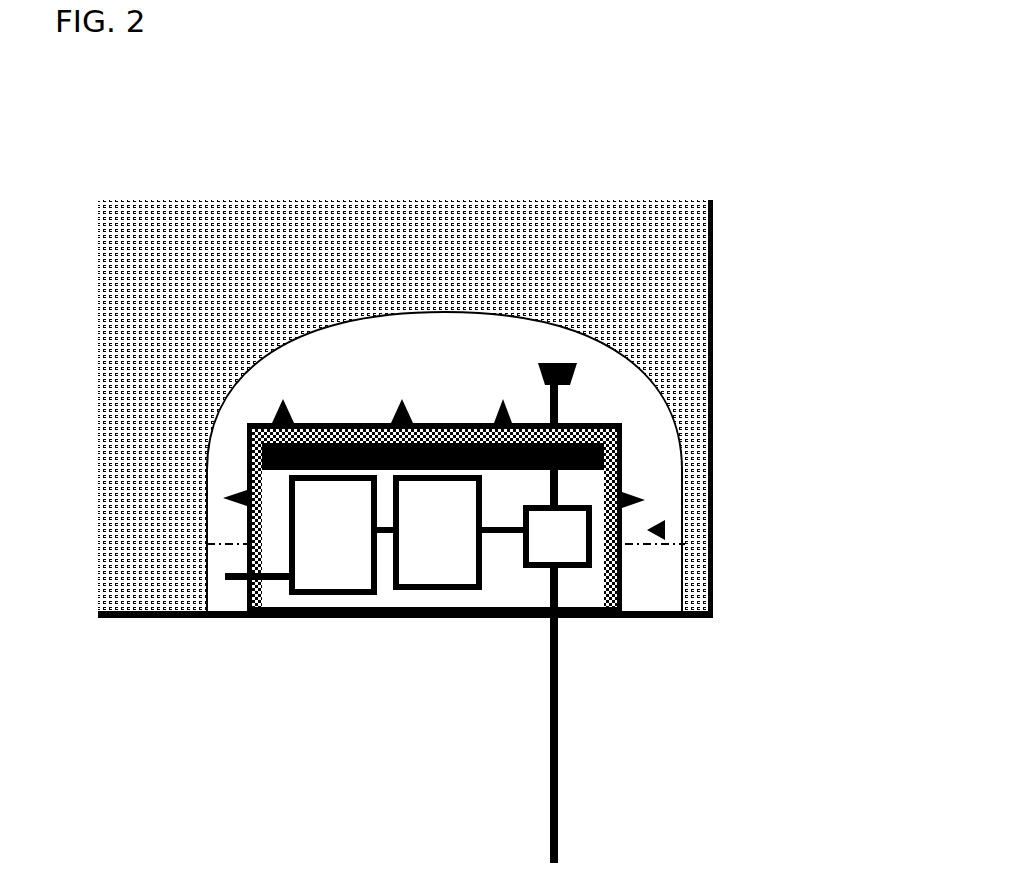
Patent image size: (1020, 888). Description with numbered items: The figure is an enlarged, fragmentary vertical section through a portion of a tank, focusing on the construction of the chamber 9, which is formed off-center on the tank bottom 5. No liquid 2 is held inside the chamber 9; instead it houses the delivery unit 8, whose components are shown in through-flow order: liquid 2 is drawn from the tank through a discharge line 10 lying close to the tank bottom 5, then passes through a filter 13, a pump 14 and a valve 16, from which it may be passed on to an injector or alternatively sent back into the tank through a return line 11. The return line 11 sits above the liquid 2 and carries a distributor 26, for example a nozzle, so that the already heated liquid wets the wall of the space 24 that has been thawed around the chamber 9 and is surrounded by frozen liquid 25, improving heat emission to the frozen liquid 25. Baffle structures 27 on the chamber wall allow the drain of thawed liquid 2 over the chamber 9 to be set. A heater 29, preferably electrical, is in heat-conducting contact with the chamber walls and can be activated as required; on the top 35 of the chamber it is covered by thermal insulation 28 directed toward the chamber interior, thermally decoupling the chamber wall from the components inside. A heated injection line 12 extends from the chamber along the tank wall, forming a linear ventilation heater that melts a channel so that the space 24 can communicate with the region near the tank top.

The liquid 2 is at (652, 602).
The tank bottom 5 is at (127, 611).
The delivery unit 8 is at (665, 530).
The chamber 9 is at (207, 430).
The discharge line 10 is at (232, 617).
The return line 11 is at (562, 407).
The injection line 12 is at (560, 833).
The filter 13 is at (355, 598).
The pump 14 is at (435, 552).
The valve 16 is at (535, 568).
The space 24 is at (288, 372).
The frozen liquid 25 is at (173, 232).
The distributor 26 is at (562, 363).
The baffle structures 27 is at (500, 423).
The thermal insulation 28 is at (432, 423).
The heater 29 is at (328, 423).
The top 35 is at (316, 423).